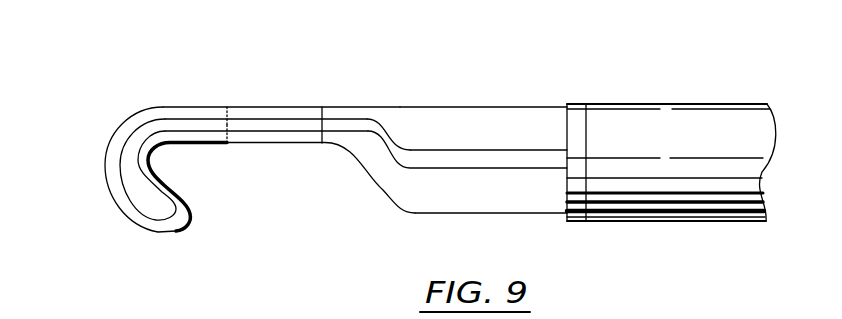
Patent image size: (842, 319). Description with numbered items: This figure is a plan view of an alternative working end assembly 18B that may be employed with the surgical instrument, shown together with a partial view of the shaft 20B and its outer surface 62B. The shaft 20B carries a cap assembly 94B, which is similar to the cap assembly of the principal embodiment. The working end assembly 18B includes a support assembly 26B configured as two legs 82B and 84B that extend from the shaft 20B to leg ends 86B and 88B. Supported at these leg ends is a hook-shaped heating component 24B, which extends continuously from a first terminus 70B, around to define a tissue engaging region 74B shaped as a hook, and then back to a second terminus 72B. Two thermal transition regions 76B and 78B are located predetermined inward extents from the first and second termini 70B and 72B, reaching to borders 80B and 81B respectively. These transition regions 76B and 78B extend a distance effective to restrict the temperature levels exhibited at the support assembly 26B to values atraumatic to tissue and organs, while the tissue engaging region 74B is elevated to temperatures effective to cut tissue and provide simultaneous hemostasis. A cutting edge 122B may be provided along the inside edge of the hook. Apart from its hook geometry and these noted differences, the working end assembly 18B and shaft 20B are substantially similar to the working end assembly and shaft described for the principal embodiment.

The working end assembly 18B is at (472, 78).
The shaft 20B is at (661, 94).
The hook-shaped heating component 24B is at (159, 86).
The support assembly 26B is at (398, 98).
The outer surface 62B is at (728, 103).
The first terminus 70B is at (322, 107).
The second terminus 72B is at (322, 143).
The tissue engaging region 74B is at (112, 137).
The thermal transition region 76B is at (293, 113).
The thermal transition region 78B is at (293, 137).
The border 80B is at (227, 107).
The border 81B is at (227, 145).
The leg 82B is at (497, 117).
The leg 84B is at (476, 198).
The leg end 86B is at (390, 124).
The leg end 88B is at (412, 190).
The cap assembly 94B is at (570, 222).
The cutting edge 122B is at (190, 220).